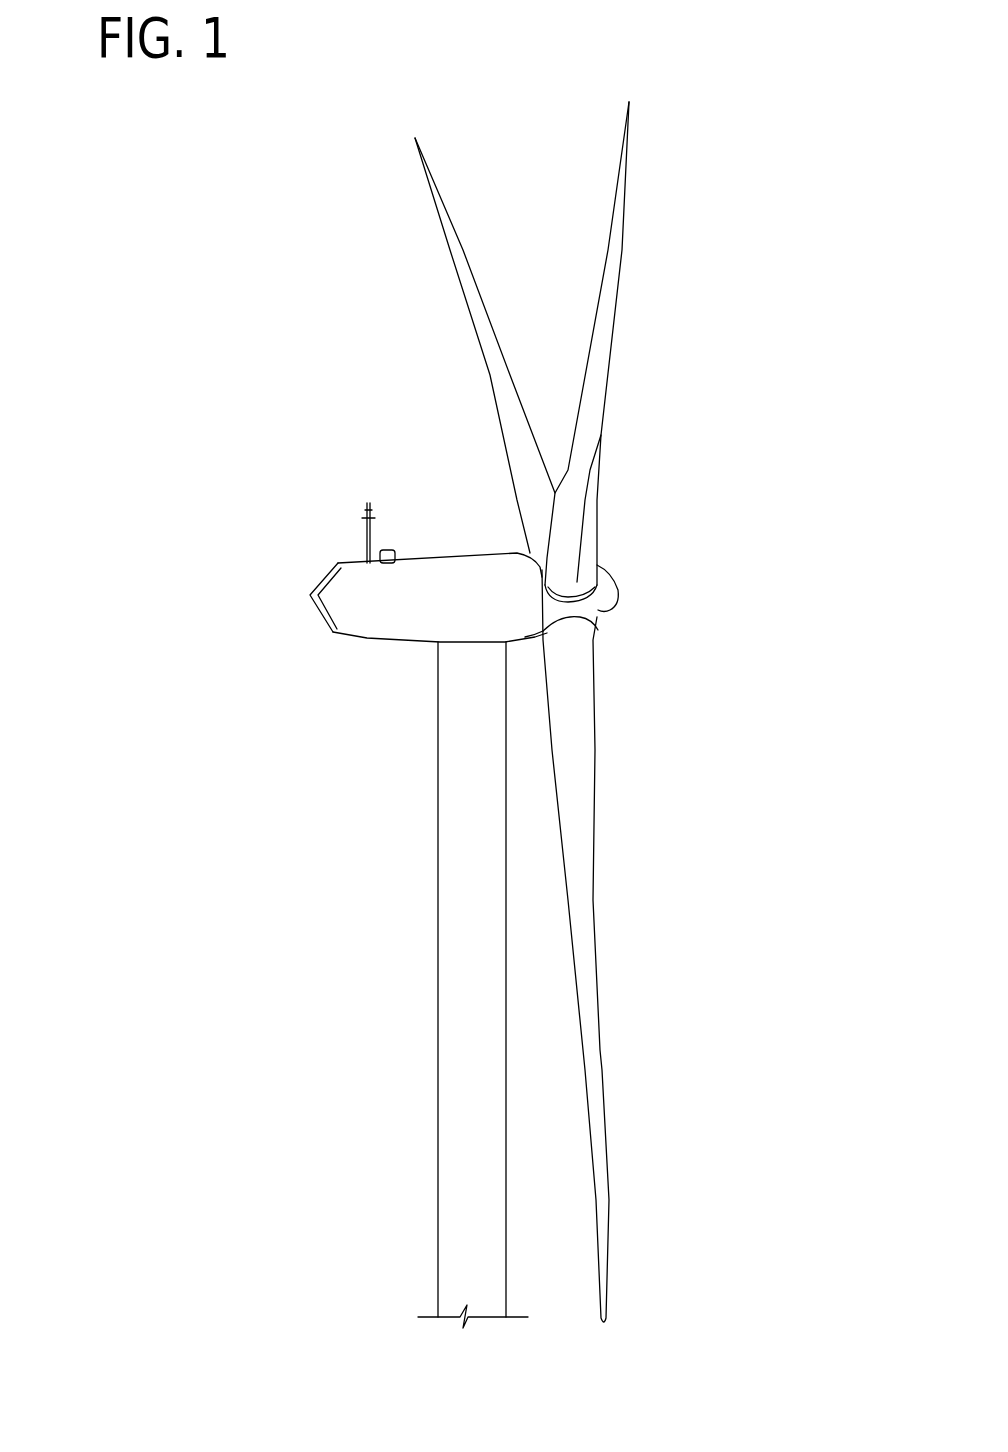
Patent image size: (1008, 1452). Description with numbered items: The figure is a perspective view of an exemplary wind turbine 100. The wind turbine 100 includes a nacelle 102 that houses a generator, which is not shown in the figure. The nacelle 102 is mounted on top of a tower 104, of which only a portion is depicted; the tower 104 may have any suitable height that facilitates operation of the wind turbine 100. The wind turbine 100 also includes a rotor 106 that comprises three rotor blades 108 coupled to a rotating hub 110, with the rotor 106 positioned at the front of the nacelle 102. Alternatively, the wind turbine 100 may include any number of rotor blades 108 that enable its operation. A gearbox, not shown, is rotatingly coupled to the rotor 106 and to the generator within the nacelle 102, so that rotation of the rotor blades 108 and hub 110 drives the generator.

The wind turbine 100 is at (278, 168).
The nacelle 102 is at (347, 657).
The tower 104 is at (437, 930).
The rotor 106 is at (690, 320).
The rotor blades 108 is at (454, 226).
The rotating hub 110 is at (608, 612).